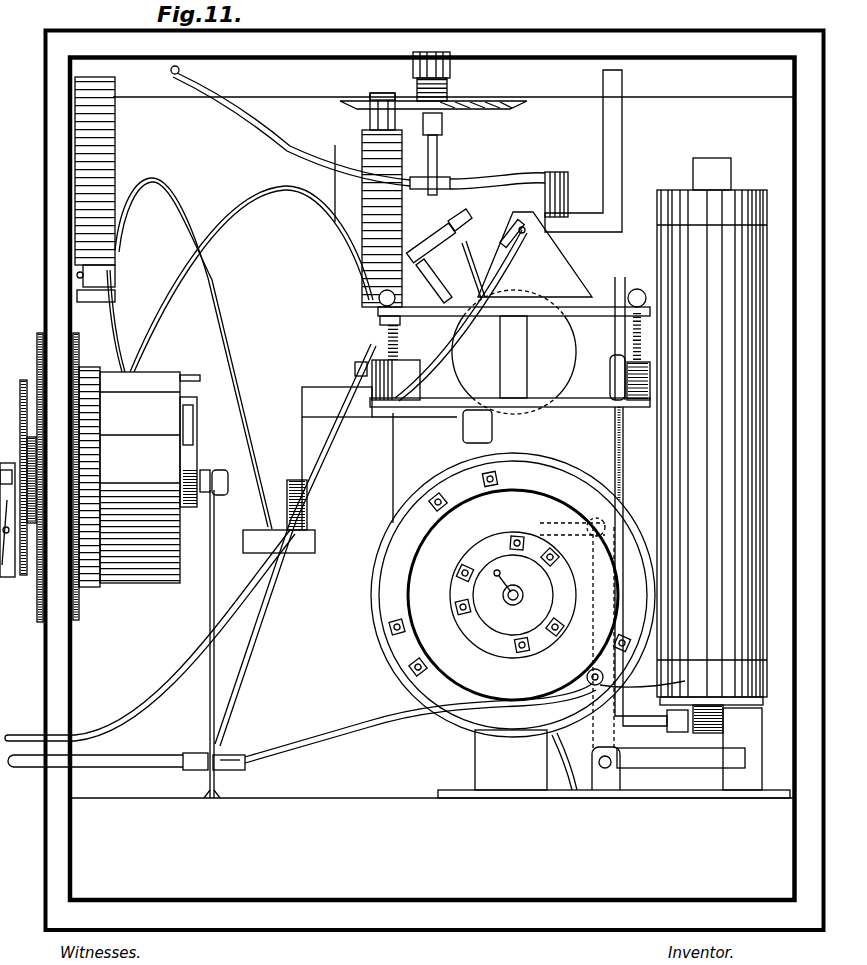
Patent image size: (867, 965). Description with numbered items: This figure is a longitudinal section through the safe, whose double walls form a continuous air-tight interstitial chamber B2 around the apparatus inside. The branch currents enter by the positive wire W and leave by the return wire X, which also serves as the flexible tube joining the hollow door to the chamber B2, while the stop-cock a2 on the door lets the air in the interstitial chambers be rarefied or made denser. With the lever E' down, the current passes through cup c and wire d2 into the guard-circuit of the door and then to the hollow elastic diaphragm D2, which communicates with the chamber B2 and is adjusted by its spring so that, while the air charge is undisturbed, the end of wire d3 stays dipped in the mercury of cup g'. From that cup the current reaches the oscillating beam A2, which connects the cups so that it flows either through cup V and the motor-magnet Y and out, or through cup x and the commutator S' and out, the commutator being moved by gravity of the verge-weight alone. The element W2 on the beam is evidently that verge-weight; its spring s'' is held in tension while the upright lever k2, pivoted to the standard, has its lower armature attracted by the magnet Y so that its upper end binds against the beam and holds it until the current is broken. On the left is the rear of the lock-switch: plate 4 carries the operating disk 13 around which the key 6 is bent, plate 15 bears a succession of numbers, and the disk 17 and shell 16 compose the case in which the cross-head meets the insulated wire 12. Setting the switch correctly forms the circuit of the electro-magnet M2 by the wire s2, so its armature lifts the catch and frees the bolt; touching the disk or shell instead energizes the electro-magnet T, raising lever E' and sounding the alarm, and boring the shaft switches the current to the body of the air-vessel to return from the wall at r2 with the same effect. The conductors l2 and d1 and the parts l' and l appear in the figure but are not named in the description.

The interstitial chamber B2 is at (435, 481).
The motor-magnet Y is at (679, 474).
The upright lever k2 is at (641, 566).
The cup x is at (630, 338).
The beam A2 is at (510, 309).
The wheel W2 is at (514, 352).
The spring s'' is at (446, 256).
The cup g' is at (517, 194).
The wire d3 is at (290, 126).
The elastic diaphragm D2 is at (433, 123).
The electro-magnet T is at (382, 200).
The cup V is at (396, 358).
The lever E' is at (397, 458).
The cup c is at (279, 516).
The electro-magnet M2 is at (95, 189).
The wire s2 is at (118, 321).
The pipe l2 is at (251, 279).
The wire d2 is at (193, 353).
The shell 16 is at (150, 477).
The disk 17 is at (89, 477).
The wire 12 is at (187, 446).
The stop-cock a2 is at (214, 473).
The rod d1 is at (209, 644).
The plate 4 is at (35, 477).
The plate 15 is at (84, 476).
The operating disk 13 is at (22, 477).
The operating-key 6 is at (7, 520).
The wire W is at (150, 635).
The wire X is at (302, 735).
The commutator S' is at (580, 625).
The hub l' is at (511, 594).
The lever l is at (612, 654).
The wall point r2 is at (342, 183).